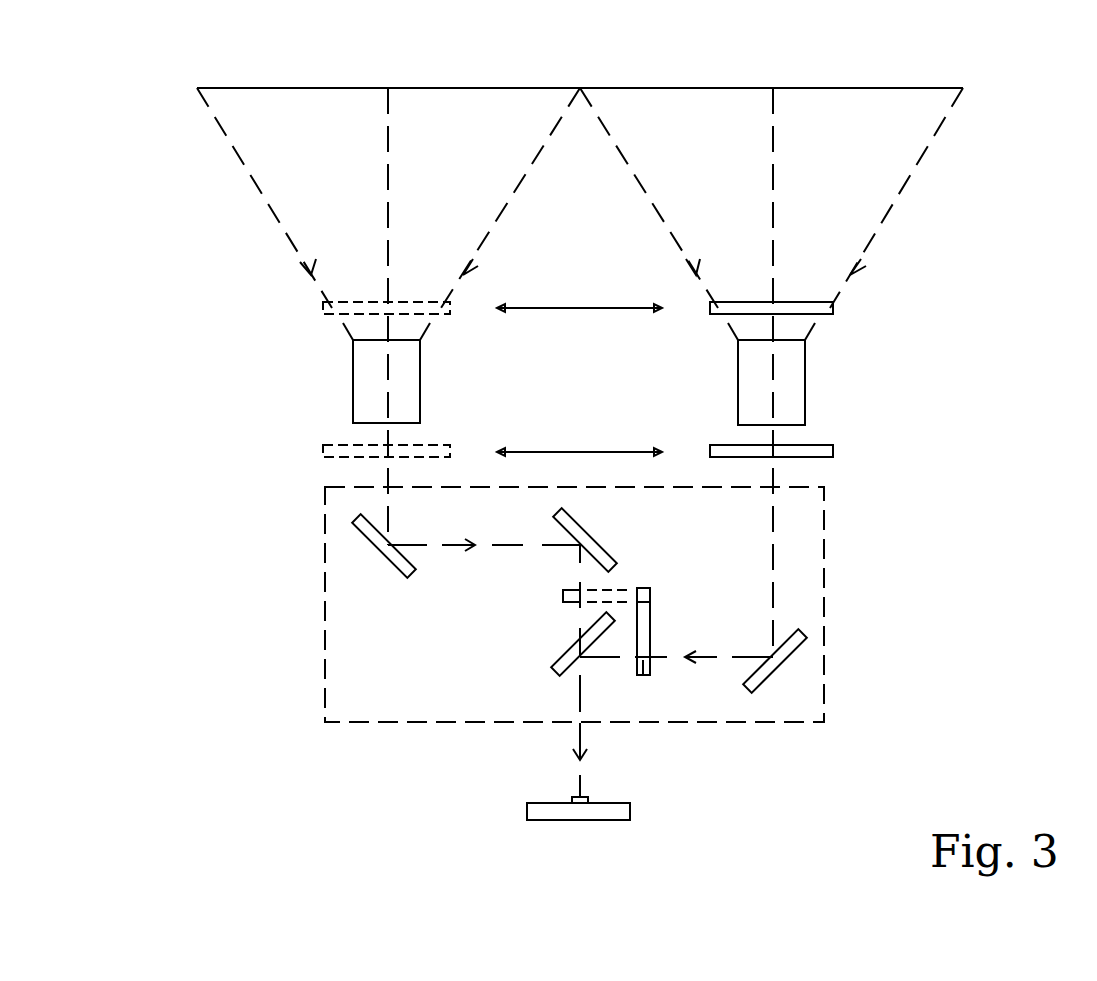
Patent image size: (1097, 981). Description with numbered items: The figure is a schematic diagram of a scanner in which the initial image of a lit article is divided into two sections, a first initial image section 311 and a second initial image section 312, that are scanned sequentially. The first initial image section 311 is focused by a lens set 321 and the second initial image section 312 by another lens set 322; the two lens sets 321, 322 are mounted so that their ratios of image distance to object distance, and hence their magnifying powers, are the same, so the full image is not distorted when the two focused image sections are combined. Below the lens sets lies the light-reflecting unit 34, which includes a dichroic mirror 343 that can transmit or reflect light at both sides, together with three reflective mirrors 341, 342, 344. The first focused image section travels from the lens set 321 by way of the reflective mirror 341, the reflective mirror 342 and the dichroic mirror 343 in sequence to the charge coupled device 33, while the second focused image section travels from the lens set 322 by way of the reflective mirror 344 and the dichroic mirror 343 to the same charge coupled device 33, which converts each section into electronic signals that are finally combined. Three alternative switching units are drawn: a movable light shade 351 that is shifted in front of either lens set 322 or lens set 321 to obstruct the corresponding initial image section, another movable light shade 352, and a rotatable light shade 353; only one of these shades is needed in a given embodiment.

The first initial image section 311 is at (388, 88).
The second initial image section 312 is at (773, 88).
The lens set 321 is at (372, 378).
The lens set 322 is at (790, 377).
The movable light shade 351 is at (833, 306).
The movable light shade 352 is at (828, 450).
The light-reflecting unit 34 is at (805, 565).
The reflective mirror 341 is at (388, 557).
The reflective mirror 342 is at (605, 540).
The dichroic mirror 343 is at (553, 672).
The reflective mirror 344 is at (785, 650).
The rotatable light shade 353 is at (643, 675).
The charge coupled device 33 is at (555, 813).